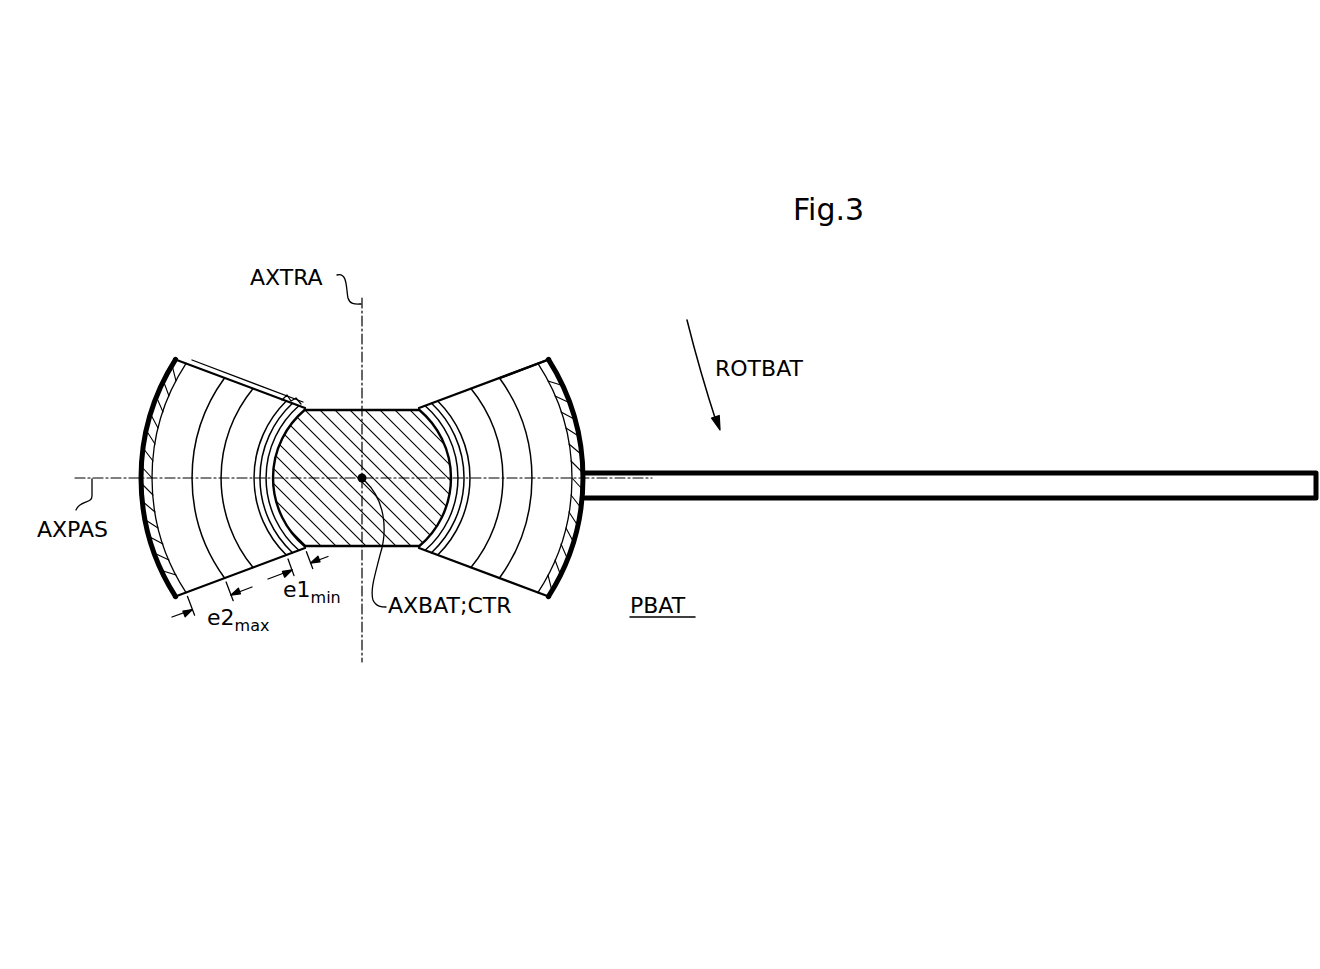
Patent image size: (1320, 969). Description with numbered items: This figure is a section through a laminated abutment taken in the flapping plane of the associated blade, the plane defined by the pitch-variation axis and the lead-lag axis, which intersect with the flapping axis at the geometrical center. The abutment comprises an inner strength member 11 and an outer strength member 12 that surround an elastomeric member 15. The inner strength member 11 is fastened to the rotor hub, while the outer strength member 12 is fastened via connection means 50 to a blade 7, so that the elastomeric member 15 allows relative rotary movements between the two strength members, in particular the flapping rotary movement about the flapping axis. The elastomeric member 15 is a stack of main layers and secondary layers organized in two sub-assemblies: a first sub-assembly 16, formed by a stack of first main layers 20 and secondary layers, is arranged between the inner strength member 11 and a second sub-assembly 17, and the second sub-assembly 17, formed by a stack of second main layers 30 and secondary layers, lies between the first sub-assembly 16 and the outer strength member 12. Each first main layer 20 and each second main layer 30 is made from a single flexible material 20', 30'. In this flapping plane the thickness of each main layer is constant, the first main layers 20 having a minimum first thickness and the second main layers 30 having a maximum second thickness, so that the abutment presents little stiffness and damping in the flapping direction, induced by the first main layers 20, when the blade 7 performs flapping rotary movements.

The blade 7 is at (1100, 468).
The inner strength member 11 is at (339, 460).
The outer strength member 12 is at (541, 361).
The elastomeric member 15 is at (481, 656).
The first sub-assembly 16 is at (298, 385).
The second sub-assembly 17 is at (245, 372).
The first main layer 20 is at (363, 442).
The single flexible material of the first main layer 20' is at (362, 478).
The second main layer 30 is at (364, 437).
The single flexible material of the second main layer 30' is at (362, 478).
The connection means 50 is at (578, 413).